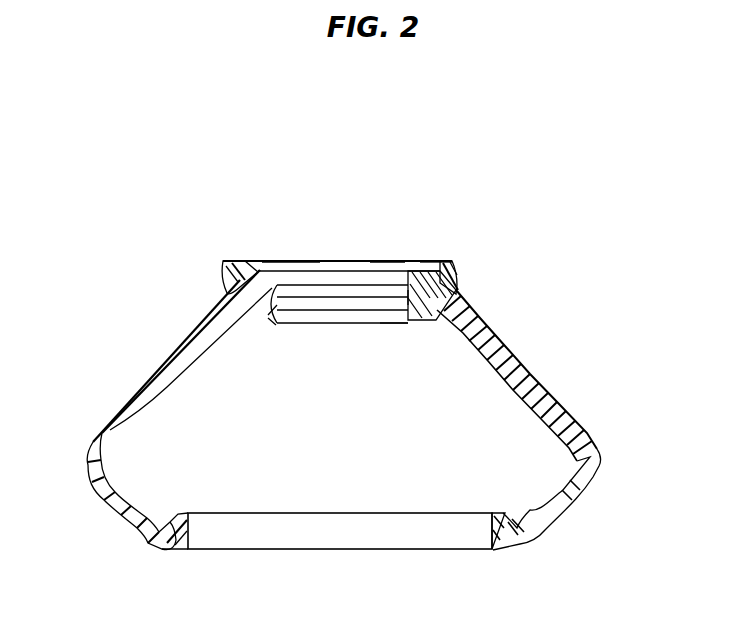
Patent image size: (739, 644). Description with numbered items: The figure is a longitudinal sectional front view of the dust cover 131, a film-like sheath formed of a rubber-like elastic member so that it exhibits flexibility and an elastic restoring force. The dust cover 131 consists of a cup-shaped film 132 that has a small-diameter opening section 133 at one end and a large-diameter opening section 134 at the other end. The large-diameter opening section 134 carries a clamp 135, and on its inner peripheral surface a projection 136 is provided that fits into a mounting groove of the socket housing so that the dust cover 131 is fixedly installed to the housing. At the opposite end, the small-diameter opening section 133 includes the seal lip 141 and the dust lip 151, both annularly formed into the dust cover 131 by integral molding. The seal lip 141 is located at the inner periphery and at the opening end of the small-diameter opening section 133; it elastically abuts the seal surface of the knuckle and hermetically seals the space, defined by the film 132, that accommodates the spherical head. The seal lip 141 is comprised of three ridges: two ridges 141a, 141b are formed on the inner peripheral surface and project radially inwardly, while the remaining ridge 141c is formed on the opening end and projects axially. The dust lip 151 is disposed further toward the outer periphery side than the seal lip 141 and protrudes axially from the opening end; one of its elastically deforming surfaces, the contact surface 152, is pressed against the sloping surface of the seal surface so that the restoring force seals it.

The dust cover 131 is at (153, 372).
The cup-shaped film 132 is at (530, 374).
The small-diameter opening section 133 is at (258, 260).
The large-diameter opening section 134 is at (260, 530).
The clamp 135 is at (518, 542).
The projection 136 is at (460, 523).
The seal lip 141 is at (338, 273).
The ridge 141a is at (382, 318).
The ridge 141b is at (409, 298).
The ridge 141c is at (387, 262).
The dust lip 151 is at (456, 263).
The contact surface 152 is at (291, 262).